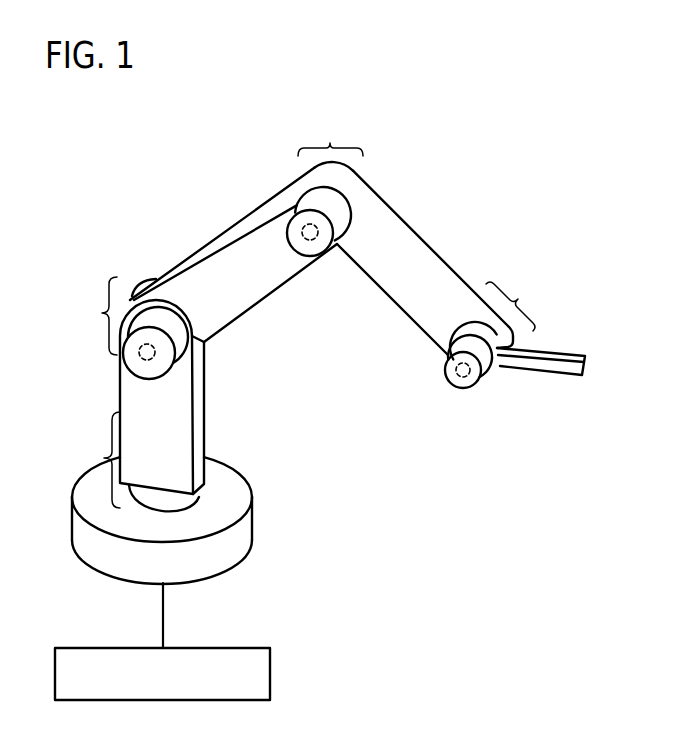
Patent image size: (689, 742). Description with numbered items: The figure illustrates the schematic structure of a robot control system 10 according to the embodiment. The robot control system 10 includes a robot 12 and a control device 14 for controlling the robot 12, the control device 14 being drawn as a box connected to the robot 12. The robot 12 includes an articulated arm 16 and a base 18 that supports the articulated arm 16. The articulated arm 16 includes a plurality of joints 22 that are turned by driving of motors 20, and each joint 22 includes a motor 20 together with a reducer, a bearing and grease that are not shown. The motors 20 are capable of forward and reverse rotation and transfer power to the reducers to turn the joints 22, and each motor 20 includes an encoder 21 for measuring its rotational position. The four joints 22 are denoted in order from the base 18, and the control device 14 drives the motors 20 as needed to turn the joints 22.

The robot control system 10 is at (550, 99).
The robot 12 is at (457, 190).
The control device 14 is at (270, 655).
The articulated arm 16 is at (173, 427).
The base 18 is at (233, 550).
The motor 20 is at (308, 246).
The encoder 21 is at (320, 238).
The joint 22 is at (309, 315).